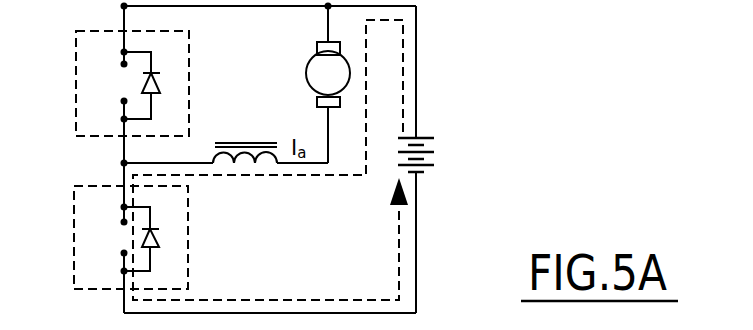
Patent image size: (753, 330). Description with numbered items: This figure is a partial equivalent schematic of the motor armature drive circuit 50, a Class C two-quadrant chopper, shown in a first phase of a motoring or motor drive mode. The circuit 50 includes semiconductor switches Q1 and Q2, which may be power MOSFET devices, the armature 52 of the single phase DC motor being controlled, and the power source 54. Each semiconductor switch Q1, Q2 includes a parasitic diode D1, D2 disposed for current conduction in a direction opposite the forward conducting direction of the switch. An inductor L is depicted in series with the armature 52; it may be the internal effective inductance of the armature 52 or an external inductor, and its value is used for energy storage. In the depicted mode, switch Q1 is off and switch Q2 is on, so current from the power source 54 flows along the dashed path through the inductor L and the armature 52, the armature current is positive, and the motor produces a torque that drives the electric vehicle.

The motor armature drive circuit 50 is at (440, 42).
The armature 52 is at (307, 62).
The power source 54 is at (430, 160).
The semiconductor switch Q1 is at (76, 78).
The semiconductor switch Q2 is at (74, 234).
The parasitic diode D1 is at (123, 77).
The parasitic diode D2 is at (122, 232).
The inductor L is at (245, 141).